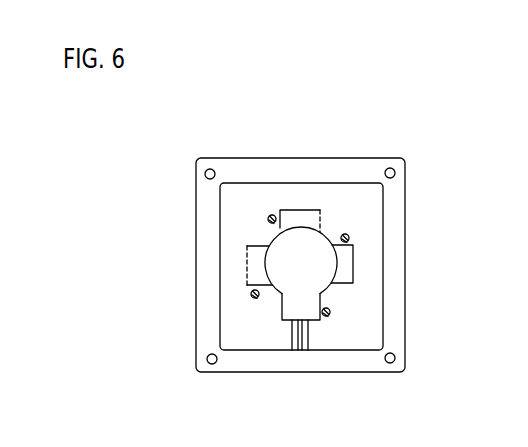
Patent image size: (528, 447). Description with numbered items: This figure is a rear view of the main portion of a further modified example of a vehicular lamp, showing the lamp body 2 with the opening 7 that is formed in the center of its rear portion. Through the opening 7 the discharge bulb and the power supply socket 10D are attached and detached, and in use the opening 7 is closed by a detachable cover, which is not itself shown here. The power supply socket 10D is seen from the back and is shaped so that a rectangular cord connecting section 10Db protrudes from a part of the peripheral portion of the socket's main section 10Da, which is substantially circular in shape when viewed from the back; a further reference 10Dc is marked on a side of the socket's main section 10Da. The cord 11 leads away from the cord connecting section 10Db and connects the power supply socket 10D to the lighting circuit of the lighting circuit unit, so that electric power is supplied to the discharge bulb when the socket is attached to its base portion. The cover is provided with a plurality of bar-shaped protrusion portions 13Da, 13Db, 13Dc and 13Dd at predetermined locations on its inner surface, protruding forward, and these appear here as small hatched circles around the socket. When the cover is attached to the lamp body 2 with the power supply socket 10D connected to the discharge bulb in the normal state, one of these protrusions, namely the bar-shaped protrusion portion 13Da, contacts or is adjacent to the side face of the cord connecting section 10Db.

The lamp body 2 is at (317, 158).
The opening 7 is at (372, 183).
The power supply socket 10D is at (298, 233).
The socket's main section 10Da is at (250, 277).
The cord connecting section 10Db is at (321, 209).
The hidden edge of left projecting portion 10Dc is at (247, 245).
The cord 11 is at (308, 337).
The bar-shaped protrusion portion 13Da is at (330, 312).
The bar-shaped protrusion portion 13Db is at (254, 297).
The bar-shaped protrusion portion 13Dc is at (270, 216).
The bar-shaped protrusion portion 13Dd is at (348, 236).